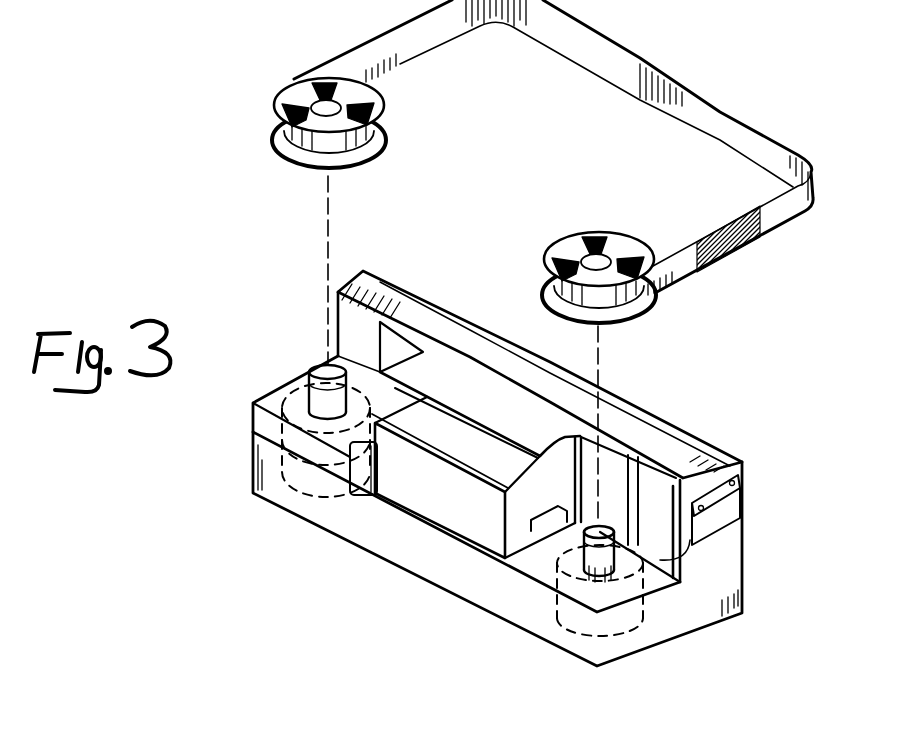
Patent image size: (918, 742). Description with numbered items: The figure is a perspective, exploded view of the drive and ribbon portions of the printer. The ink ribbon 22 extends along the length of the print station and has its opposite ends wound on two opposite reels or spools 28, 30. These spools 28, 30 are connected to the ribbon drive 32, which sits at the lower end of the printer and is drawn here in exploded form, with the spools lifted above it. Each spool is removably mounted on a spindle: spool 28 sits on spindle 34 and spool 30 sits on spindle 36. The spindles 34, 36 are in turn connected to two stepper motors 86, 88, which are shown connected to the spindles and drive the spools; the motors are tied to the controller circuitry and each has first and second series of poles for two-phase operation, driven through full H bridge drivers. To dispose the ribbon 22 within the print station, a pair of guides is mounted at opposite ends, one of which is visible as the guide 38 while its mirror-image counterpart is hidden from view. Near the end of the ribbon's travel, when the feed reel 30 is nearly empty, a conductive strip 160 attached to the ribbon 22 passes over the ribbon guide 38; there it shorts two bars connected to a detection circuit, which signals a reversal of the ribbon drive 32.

The ink ribbon 22 is at (703, 92).
The conductive strip 160 is at (740, 262).
The spool 28 is at (283, 150).
The spool 30 is at (627, 327).
The ribbon drive 32 is at (423, 563).
The spindle 34 is at (303, 387).
The spindle 36 is at (560, 590).
The guide 38 is at (745, 470).
The stepper motor 86 is at (300, 462).
The stepper motor 88 is at (627, 620).